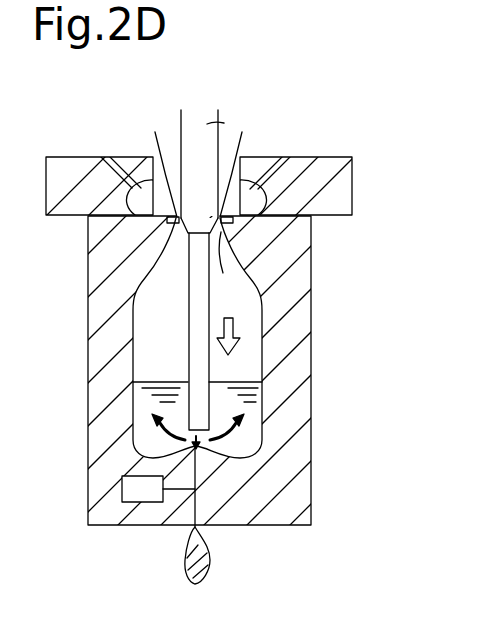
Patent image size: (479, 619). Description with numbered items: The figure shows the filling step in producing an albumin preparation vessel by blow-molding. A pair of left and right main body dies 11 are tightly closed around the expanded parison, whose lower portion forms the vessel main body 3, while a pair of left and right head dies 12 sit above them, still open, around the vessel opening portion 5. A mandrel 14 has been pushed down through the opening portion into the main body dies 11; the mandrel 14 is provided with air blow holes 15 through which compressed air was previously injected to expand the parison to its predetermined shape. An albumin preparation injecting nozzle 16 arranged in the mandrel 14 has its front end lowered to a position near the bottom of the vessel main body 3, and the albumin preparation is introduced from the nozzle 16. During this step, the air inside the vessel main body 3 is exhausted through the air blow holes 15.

The vessel main body 3 is at (134, 359).
The vessel opening portion 5 is at (237, 152).
The main body dies 11 is at (93, 368).
The head dies 12 is at (63, 159).
The mandrel 14 is at (219, 123).
The air blow holes 15 is at (180, 222).
The albumin preparation injecting nozzle 16 is at (193, 319).